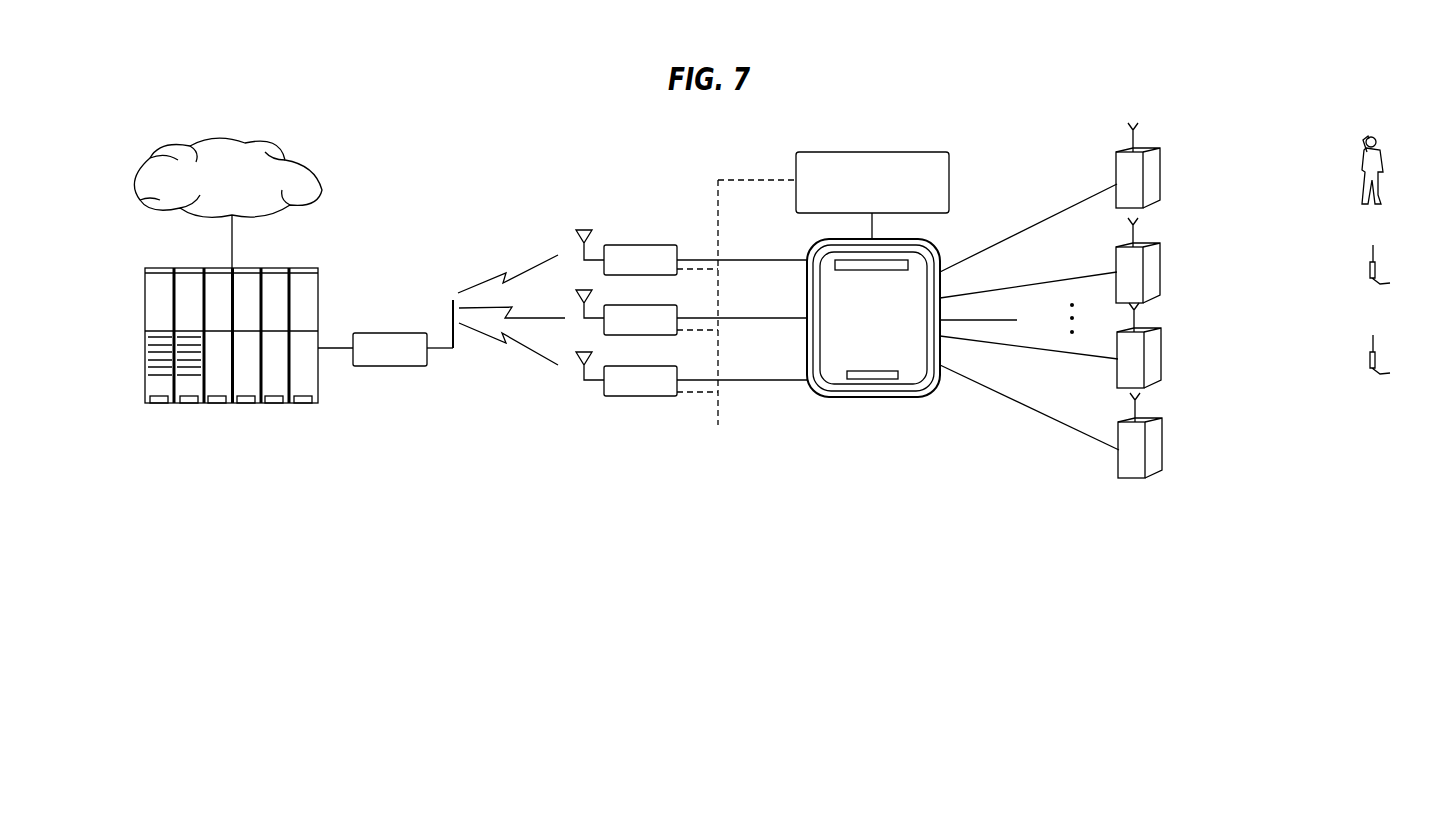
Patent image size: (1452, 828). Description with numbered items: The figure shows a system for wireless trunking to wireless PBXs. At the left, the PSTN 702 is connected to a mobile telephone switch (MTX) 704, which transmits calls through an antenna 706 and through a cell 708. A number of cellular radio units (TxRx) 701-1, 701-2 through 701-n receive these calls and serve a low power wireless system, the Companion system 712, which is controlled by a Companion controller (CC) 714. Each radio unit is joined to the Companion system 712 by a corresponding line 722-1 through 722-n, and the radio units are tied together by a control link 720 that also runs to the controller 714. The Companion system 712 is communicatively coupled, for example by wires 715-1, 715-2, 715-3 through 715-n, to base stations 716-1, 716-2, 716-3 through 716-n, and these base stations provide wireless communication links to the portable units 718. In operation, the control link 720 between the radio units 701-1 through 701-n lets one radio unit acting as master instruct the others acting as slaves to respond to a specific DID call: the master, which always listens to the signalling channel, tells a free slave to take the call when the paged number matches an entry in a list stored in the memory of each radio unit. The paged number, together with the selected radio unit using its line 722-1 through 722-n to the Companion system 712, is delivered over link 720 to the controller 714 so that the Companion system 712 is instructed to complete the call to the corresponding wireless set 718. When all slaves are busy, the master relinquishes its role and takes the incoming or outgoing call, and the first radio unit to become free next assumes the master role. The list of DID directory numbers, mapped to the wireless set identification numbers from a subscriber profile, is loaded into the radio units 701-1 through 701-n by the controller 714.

The PSTN 702 is at (247, 142).
The mobile telephone switch (MTX) 704 is at (301, 268).
The antenna 706 is at (450, 296).
The cell 708 is at (377, 334).
The cellular radio unit (TxRx) 701-1 is at (621, 245).
The cellular radio unit (TxRx) 701-2 is at (621, 305).
The cellular radio unit (TxRx) 701-n is at (621, 366).
The control link 720 is at (748, 173).
The line 722-1 is at (727, 260).
The line 722-n is at (727, 380).
The Companion controller (CC) 714 is at (858, 152).
The Companion system 712 is at (812, 396).
The wire 715-1 is at (1031, 222).
The wire 715-2 is at (1062, 278).
The wire 715-3 is at (1063, 354).
The wire 715-n is at (1064, 425).
The base station 716-1 is at (1150, 189).
The base station 716-2 is at (1150, 284).
The base station 716-3 is at (1151, 369).
The base station 716-n is at (1152, 461).
The portable units 718 is at (1384, 122).